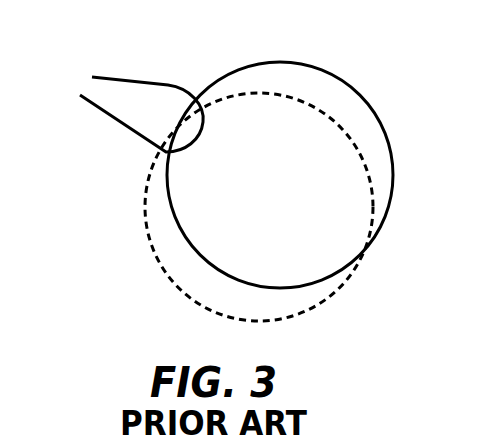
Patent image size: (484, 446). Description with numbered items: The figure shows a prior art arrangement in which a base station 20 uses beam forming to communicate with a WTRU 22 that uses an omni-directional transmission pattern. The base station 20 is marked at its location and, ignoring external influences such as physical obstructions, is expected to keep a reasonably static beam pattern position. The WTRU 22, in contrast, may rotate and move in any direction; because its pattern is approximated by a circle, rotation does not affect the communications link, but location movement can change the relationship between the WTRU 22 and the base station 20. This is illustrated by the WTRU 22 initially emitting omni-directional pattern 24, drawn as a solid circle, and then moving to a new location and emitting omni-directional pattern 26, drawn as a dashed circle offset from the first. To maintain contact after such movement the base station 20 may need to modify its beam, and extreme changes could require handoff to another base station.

The base station 20 is at (37, 65).
The WTRU 22 is at (245, 168).
The omni-directional pattern 24 is at (393, 182).
The omni-directional pattern 26 is at (315, 303).